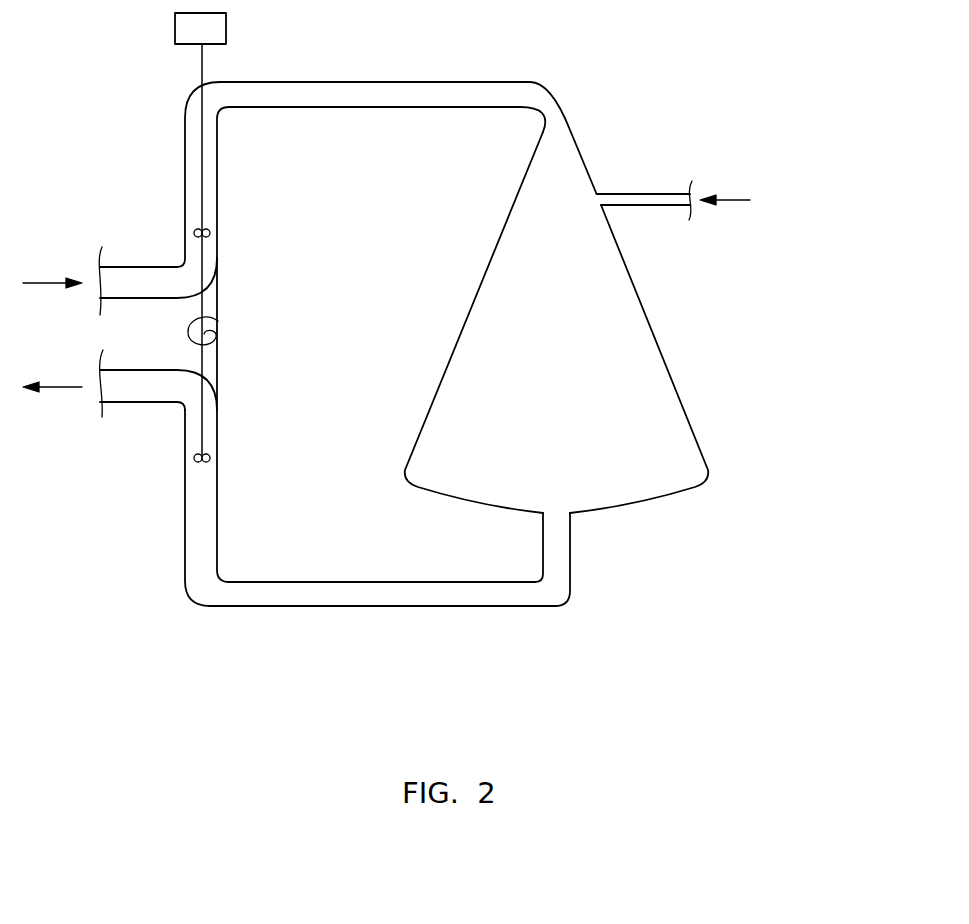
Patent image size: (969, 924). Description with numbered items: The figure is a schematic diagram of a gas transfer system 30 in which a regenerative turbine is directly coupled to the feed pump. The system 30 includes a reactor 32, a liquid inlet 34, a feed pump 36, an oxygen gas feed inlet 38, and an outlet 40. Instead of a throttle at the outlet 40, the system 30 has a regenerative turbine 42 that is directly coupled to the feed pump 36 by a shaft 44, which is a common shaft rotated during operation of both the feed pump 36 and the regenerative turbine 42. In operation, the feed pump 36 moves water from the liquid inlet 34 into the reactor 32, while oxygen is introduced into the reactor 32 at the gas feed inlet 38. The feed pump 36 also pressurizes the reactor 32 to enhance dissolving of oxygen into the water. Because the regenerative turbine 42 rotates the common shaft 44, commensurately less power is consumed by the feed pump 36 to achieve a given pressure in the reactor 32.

The gas transfer system 30 is at (730, 428).
The reactor 32 is at (658, 342).
The liquid inlet 34 is at (442, 82).
The feed pump 36 is at (226, 28).
The gas feed inlet 38 is at (640, 207).
The outlet 40 is at (457, 606).
The regenerative turbine 42 is at (202, 403).
The shaft 44 is at (202, 307).